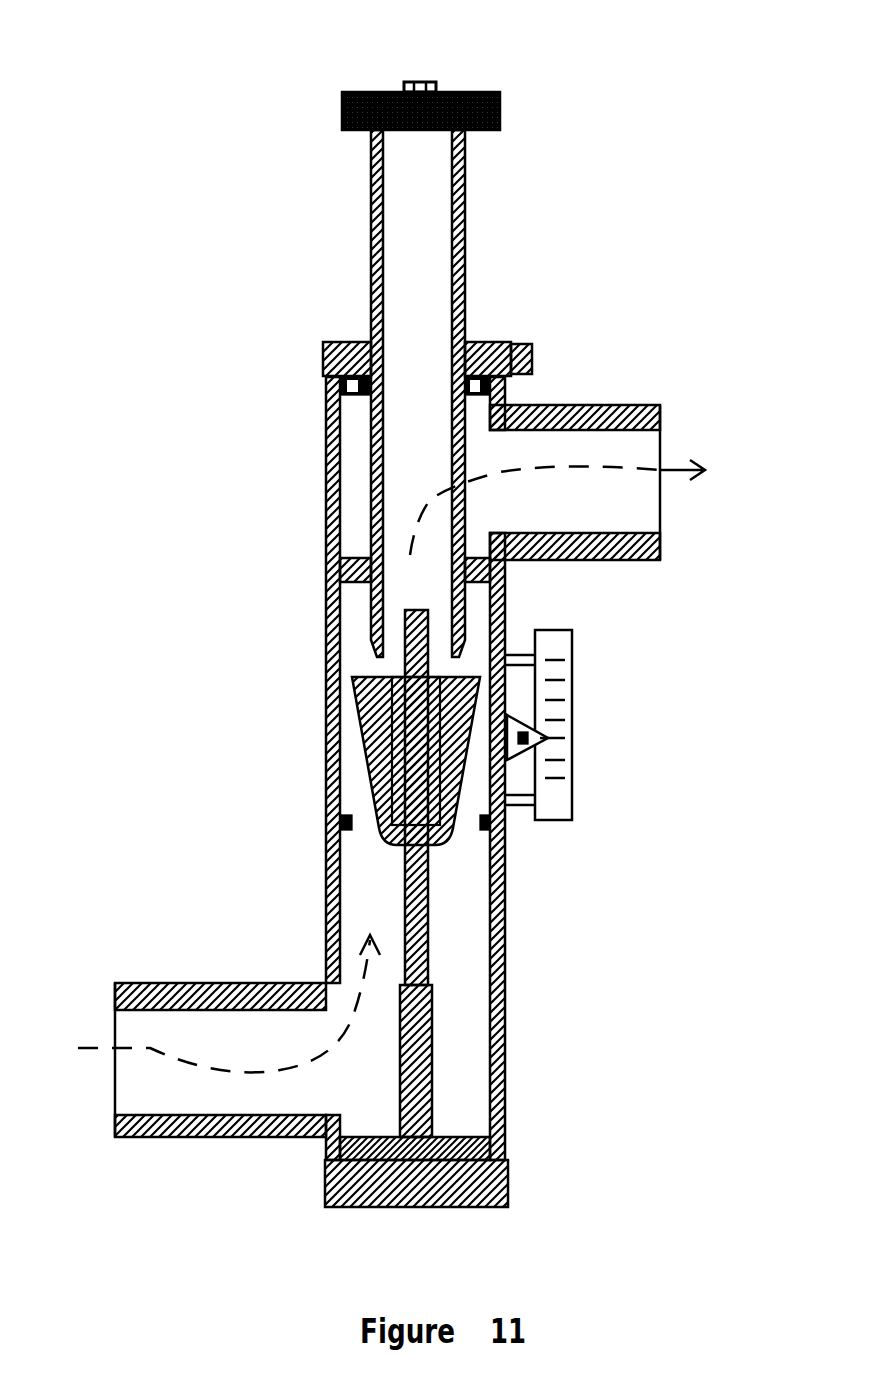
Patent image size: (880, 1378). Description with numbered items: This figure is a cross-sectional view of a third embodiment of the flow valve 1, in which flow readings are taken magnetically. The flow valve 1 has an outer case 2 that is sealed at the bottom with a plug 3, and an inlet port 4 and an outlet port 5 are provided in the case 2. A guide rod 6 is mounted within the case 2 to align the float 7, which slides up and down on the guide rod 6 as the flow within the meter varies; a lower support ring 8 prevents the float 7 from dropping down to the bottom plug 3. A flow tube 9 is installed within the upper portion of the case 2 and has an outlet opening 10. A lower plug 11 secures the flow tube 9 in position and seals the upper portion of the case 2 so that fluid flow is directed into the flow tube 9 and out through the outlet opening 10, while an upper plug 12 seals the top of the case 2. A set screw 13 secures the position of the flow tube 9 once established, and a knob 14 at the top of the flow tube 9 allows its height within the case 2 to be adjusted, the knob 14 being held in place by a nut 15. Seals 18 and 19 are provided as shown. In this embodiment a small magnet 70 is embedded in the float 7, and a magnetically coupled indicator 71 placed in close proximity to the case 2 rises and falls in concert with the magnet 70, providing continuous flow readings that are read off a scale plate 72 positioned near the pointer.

The flow valve 1 is at (142, 142).
The outer case 2 is at (305, 688).
The plug 3 is at (322, 1195).
The inlet port 4 is at (135, 1092).
The outlet port 5 is at (635, 505).
The guide rod 6 is at (420, 960).
The float 7 is at (355, 735).
The lower support ring 8 is at (345, 835).
The flow tube 9 is at (466, 235).
The outlet opening 10 is at (447, 486).
The lower plug 11 is at (355, 590).
The upper plug 12 is at (325, 440).
The set screw 13 is at (532, 358).
The knob 14 is at (500, 110).
The nut 15 is at (400, 82).
The seal 18 is at (325, 380).
The seal 19 is at (500, 1160).
The magnet 70 is at (405, 765).
The magnetically coupled indicator 71 is at (520, 790).
The scale plate 72 is at (575, 720).